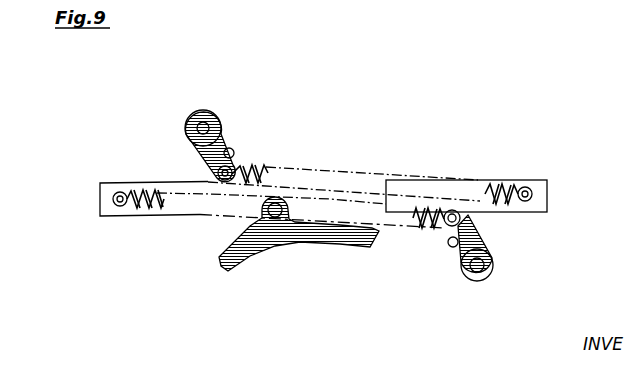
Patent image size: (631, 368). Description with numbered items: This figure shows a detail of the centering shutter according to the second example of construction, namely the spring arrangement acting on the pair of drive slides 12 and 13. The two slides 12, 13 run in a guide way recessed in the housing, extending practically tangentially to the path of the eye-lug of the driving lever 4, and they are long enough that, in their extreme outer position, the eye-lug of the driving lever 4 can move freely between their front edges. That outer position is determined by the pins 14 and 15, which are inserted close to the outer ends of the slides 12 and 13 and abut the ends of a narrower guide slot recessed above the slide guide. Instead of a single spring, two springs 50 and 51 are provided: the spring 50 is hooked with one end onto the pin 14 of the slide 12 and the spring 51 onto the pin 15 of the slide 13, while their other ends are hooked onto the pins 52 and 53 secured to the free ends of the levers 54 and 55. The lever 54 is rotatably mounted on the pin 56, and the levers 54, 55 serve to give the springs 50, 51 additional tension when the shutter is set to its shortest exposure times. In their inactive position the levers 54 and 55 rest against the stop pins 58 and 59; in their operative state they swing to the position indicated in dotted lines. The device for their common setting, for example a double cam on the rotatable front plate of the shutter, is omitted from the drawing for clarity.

The driving lever 4 is at (287, 230).
The slide 12 is at (108, 203).
The slide 13 is at (543, 198).
The pin 14 is at (122, 206).
The pin 15 is at (522, 189).
The spring 50 is at (148, 212).
The spring 51 is at (512, 206).
The pin 52 is at (451, 213).
The pin 53 is at (217, 172).
The lever 54 is at (222, 130).
The lever 55 is at (468, 253).
The pin 56 is at (195, 112).
The stop pin 58 is at (234, 151).
The stop pin 59 is at (450, 245).